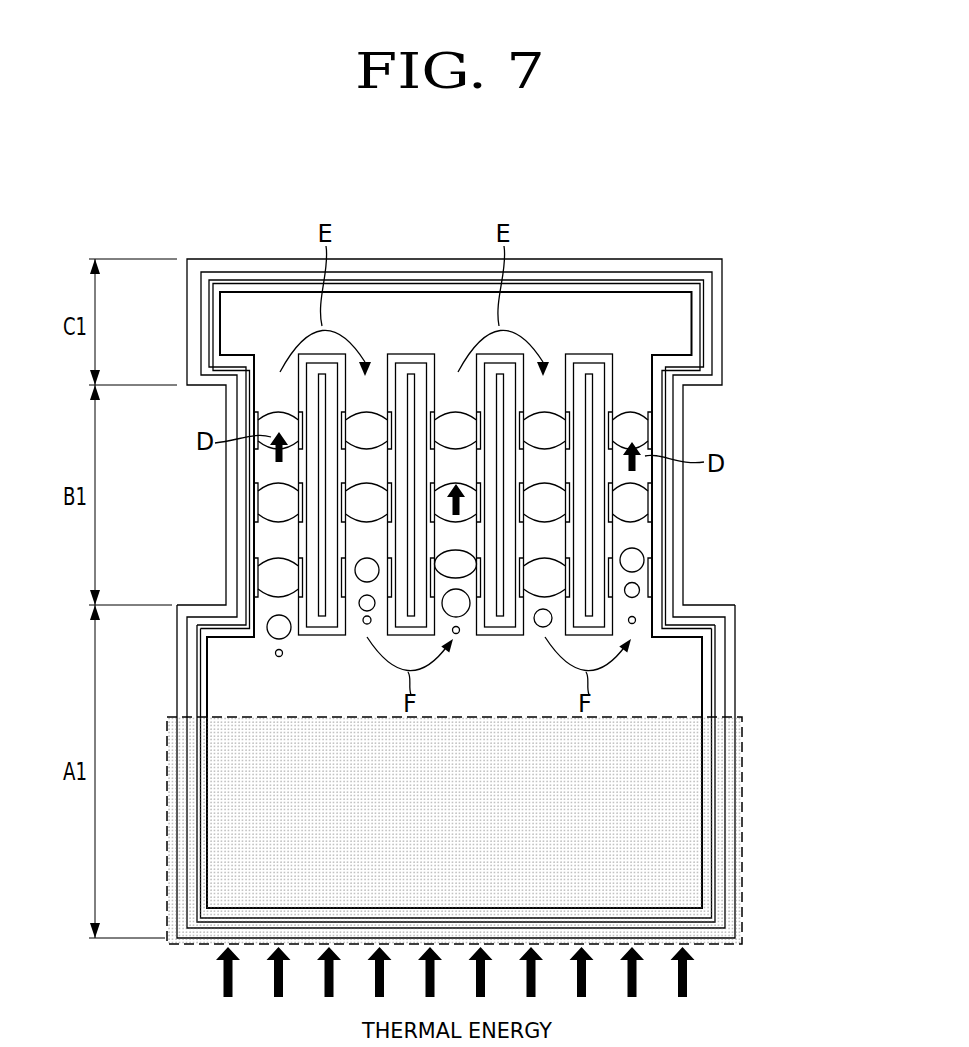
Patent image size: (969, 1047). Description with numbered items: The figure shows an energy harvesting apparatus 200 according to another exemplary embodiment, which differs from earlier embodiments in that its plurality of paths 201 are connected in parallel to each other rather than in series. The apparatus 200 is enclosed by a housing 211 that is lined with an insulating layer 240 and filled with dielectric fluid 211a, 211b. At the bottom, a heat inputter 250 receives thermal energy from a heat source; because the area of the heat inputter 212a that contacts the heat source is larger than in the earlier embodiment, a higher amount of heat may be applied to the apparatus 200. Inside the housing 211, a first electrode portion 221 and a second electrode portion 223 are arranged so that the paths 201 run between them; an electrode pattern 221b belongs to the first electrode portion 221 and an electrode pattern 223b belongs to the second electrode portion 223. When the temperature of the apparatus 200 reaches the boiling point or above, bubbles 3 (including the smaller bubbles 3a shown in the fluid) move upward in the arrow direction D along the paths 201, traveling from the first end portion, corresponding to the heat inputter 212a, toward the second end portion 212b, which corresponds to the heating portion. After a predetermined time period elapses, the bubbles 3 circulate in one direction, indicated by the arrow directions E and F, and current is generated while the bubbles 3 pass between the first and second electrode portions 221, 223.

The energy harvesting apparatus 200 is at (477, 168).
The housing 211 is at (400, 264).
The dielectric fluid 211a is at (680, 706).
The dielectric fluid 211b is at (636, 318).
The heat inputter 212a is at (751, 828).
The second end portion 212b is at (737, 322).
The insulating layer 240 is at (356, 273).
The first electrode portion 221 is at (238, 576).
The electrode pattern 221b is at (257, 504).
The second electrode portion 223 is at (321, 590).
The electrode pattern 223b is at (304, 490).
The paths 201 is at (274, 540).
The bubbles 3 is at (644, 502).
The small bubble 3a is at (631, 561).
The heat inputter 250 is at (749, 883).